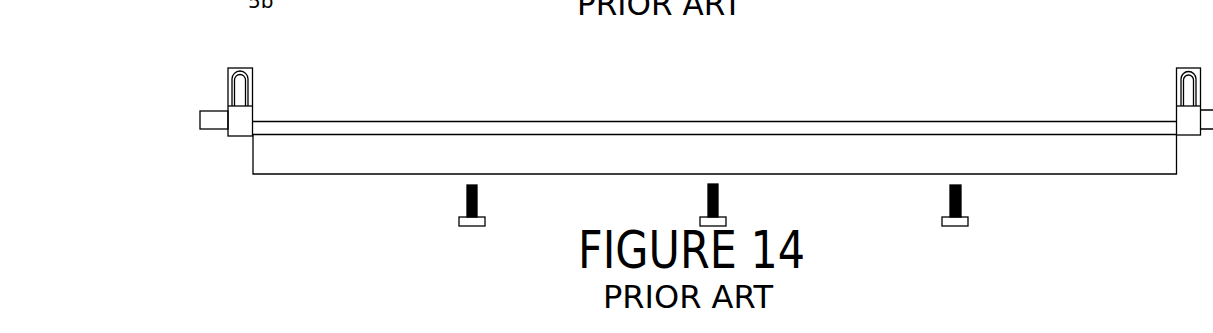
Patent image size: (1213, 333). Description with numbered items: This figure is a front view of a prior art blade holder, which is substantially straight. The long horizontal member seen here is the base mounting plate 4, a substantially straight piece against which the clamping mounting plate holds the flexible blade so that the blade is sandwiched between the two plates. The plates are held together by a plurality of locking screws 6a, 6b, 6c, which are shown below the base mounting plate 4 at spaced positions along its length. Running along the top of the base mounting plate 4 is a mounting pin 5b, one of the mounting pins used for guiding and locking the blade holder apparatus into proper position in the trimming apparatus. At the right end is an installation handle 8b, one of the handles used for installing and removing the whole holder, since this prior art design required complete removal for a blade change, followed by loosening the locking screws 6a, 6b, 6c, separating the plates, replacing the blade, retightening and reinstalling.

The base mounting plate 4 is at (266, 179).
The mounting pin 5b is at (484, 112).
The locking screw 6a is at (471, 227).
The locking screw 6b is at (700, 220).
The locking screw 6c is at (955, 226).
The installation handle 8b is at (1190, 68).